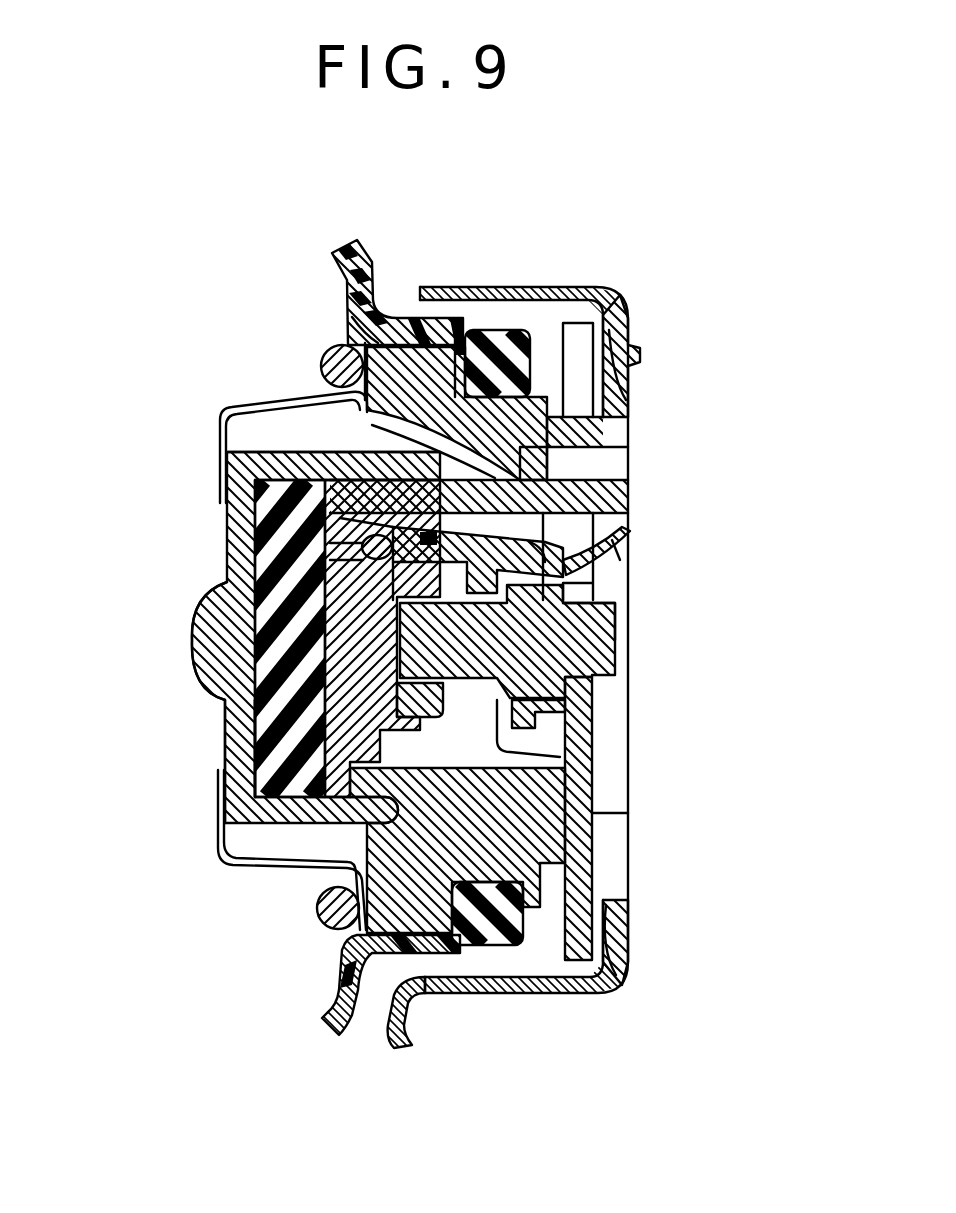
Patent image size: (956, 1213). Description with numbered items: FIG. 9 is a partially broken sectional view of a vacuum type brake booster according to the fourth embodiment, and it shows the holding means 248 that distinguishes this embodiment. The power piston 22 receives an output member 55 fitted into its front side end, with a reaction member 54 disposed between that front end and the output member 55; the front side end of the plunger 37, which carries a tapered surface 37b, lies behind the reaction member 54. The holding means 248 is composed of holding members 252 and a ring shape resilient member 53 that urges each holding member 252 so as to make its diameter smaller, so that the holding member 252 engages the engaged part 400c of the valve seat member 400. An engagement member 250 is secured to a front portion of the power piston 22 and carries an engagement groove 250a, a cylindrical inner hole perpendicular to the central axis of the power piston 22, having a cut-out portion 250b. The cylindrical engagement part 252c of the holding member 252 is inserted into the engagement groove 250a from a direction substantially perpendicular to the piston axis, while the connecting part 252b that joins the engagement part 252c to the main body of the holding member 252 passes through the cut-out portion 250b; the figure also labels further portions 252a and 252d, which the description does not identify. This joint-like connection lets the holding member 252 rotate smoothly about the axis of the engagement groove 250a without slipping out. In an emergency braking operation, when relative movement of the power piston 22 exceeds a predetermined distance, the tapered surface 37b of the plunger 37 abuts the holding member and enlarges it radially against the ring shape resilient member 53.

The power piston 22 is at (632, 425).
The plunger 37 is at (613, 667).
The tapered surface 37b is at (545, 757).
The ring shape resilient member 53 is at (232, 424).
The reaction member 54 is at (265, 775).
The output member 55 is at (230, 745).
The holding means 248 is at (520, 447).
The engagement member 250 is at (337, 777).
The engagement groove 250a is at (250, 660).
The cut-out portion 250b is at (290, 482).
The holding member 252 is at (628, 523).
The seal lip 252a is at (430, 535).
The connecting part 252b is at (545, 557).
The engagement part 252c is at (320, 548).
The elastic member lip 252d is at (255, 712).
The valve seat member 400 is at (615, 558).
The engaged part 400c is at (608, 628).